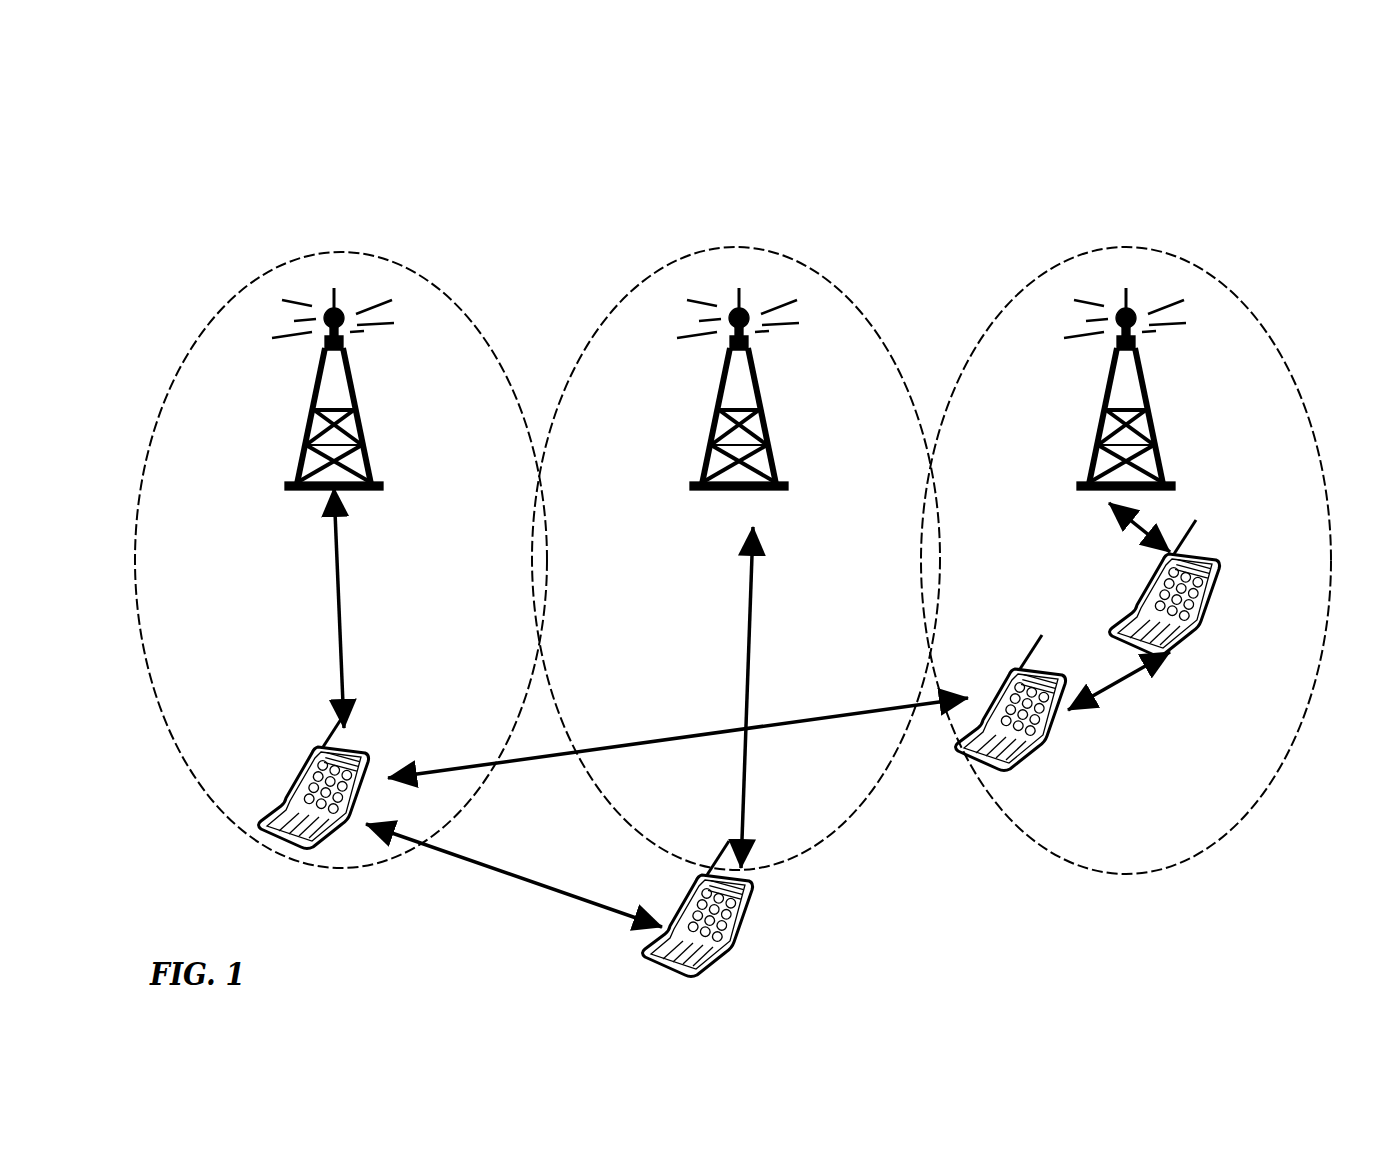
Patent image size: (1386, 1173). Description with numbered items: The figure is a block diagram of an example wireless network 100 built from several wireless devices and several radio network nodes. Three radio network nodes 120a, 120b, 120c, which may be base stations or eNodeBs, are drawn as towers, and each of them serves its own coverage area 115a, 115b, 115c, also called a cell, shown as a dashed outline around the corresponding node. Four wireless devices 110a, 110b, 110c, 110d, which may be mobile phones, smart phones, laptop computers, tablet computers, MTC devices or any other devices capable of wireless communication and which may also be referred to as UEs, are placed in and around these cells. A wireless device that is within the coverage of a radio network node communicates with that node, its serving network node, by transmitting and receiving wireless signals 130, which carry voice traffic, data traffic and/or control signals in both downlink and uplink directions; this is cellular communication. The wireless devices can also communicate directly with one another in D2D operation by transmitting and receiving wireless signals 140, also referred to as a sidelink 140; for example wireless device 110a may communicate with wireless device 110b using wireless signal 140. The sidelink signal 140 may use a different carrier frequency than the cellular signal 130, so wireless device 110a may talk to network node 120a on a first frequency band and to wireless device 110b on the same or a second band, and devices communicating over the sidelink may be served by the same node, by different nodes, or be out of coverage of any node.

The wireless network 100 is at (546, 194).
The wireless device 110a is at (282, 800).
The wireless device 110b is at (730, 942).
The wireless device 110c is at (1047, 743).
The wireless device 110d is at (1208, 604).
The coverage area 115a is at (341, 560).
The coverage area 115b is at (736, 558).
The coverage area 115c is at (1126, 560).
The network node 120a is at (318, 414).
The network node 120b is at (716, 419).
The network node 120c is at (1100, 437).
The wireless signals 130 is at (726, 678).
The wireless signal 140 is at (772, 789).